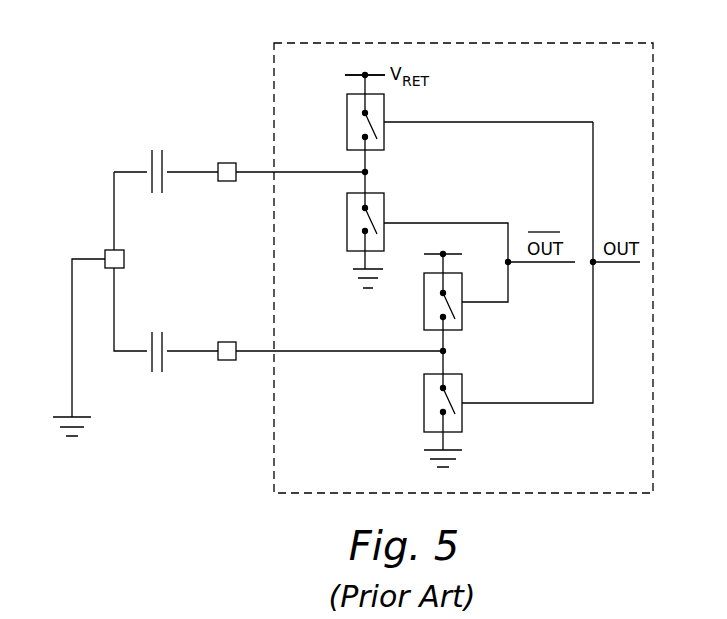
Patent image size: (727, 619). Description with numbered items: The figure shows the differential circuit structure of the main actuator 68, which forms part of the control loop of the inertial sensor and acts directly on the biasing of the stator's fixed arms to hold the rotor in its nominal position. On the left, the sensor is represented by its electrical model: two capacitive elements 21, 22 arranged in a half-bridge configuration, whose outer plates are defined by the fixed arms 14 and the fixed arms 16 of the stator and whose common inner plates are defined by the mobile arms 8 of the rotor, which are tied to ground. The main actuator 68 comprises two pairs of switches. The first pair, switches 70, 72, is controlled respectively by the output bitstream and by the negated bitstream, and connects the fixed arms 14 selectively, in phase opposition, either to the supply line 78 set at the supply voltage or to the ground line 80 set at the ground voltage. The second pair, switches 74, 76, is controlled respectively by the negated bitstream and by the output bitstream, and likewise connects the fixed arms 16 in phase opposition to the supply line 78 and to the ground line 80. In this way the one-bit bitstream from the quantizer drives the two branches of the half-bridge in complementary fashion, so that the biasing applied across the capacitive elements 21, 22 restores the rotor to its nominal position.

The main actuator 68 is at (108, 58).
The mobile arms 8 is at (106, 251).
The fixed arms 14 is at (227, 163).
The fixed arms 16 is at (227, 360).
The capacitive element 21 is at (156, 148).
The capacitive element 22 is at (156, 374).
The switch 70 is at (347, 105).
The switch 72 is at (347, 207).
The switch 74 is at (462, 324).
The switch 76 is at (424, 385).
The supply line 78 is at (352, 76).
The ground line 80 is at (353, 272).